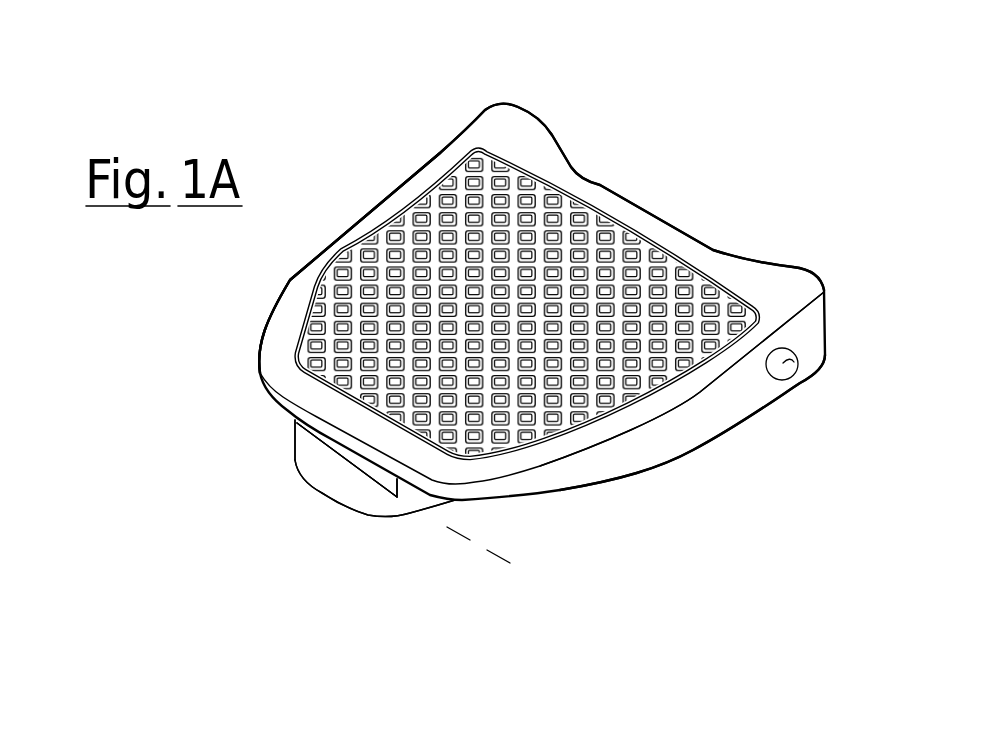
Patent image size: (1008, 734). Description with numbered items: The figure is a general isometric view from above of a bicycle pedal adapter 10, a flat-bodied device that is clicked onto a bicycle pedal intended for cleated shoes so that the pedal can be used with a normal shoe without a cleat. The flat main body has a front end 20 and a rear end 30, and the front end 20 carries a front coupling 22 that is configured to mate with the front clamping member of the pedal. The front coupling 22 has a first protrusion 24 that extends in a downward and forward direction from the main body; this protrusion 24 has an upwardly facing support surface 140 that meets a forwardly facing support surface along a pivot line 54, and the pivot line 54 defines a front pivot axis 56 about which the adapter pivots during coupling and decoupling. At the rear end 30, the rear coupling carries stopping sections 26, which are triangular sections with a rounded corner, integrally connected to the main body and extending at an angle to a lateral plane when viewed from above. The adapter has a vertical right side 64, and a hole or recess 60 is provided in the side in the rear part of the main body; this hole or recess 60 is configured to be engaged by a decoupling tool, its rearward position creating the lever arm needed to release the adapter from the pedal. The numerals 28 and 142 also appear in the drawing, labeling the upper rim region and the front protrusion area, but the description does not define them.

The bicycle pedal adapter 10 is at (335, 75).
The front end 20 is at (276, 430).
The front coupling 22 is at (420, 483).
The first protrusion 24 is at (318, 468).
The stopping sections 26 is at (549, 128).
The rim 28 is at (293, 368).
The rear end 30 is at (694, 204).
The pivot line 54 is at (307, 474).
The front pivot axis 56 is at (453, 533).
The hole or recess 60 is at (783, 360).
The vertical right side 64 is at (688, 417).
The upwardly facing support surface 140 is at (353, 478).
The flange 142 is at (313, 450).